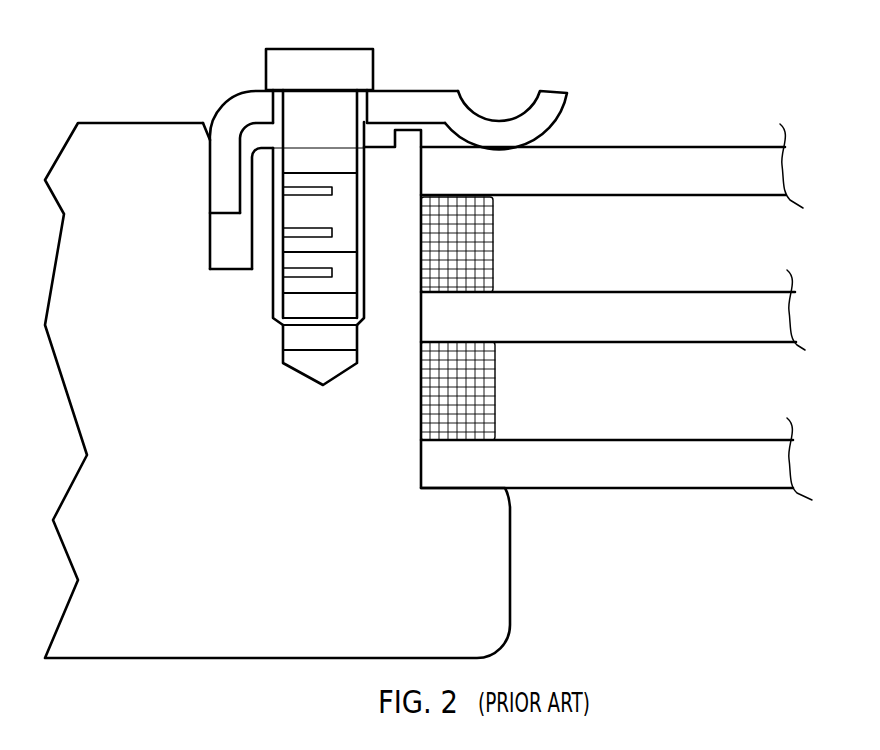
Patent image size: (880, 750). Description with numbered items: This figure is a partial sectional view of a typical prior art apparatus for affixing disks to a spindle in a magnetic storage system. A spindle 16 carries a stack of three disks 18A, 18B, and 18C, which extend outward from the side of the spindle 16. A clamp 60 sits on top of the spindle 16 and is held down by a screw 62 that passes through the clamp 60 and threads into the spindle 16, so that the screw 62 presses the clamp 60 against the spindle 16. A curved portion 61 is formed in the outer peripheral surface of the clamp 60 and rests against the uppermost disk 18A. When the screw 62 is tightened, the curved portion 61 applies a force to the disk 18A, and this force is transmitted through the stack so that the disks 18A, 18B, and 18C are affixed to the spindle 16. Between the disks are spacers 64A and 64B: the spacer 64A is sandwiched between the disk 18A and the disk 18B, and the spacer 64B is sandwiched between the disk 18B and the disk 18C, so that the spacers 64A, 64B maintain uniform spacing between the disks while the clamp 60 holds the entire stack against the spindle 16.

The spindle 16 is at (512, 580).
The disk 18A is at (726, 147).
The disk 18B is at (726, 292).
The disk 18C is at (725, 440).
The clamp 60 is at (223, 108).
The curved portion 61 is at (567, 102).
The screw 62 is at (374, 63).
The spacer 64A is at (495, 237).
The spacer 64B is at (495, 385).